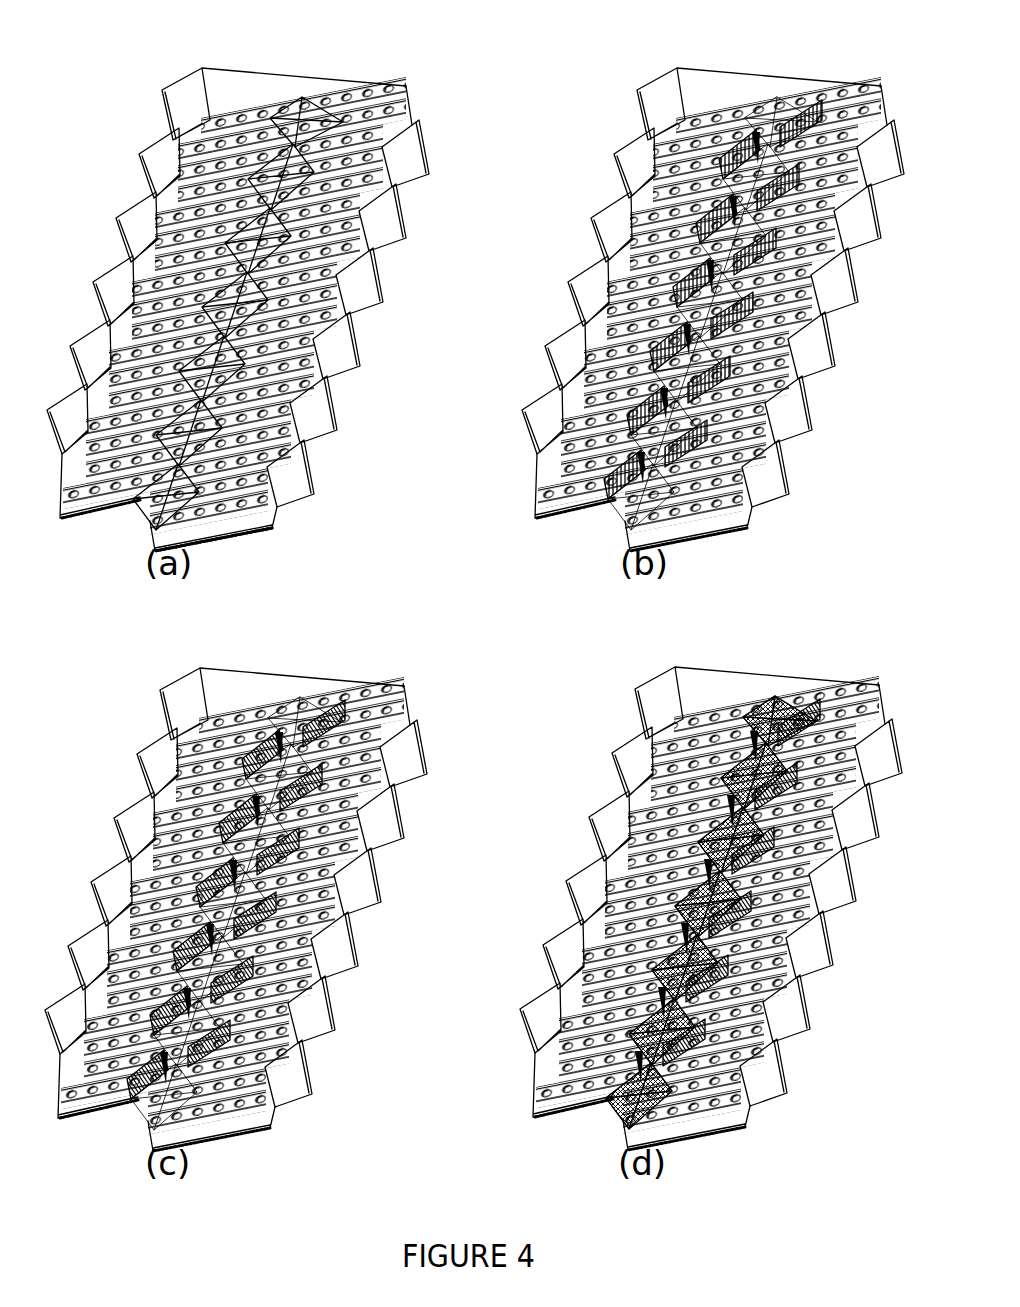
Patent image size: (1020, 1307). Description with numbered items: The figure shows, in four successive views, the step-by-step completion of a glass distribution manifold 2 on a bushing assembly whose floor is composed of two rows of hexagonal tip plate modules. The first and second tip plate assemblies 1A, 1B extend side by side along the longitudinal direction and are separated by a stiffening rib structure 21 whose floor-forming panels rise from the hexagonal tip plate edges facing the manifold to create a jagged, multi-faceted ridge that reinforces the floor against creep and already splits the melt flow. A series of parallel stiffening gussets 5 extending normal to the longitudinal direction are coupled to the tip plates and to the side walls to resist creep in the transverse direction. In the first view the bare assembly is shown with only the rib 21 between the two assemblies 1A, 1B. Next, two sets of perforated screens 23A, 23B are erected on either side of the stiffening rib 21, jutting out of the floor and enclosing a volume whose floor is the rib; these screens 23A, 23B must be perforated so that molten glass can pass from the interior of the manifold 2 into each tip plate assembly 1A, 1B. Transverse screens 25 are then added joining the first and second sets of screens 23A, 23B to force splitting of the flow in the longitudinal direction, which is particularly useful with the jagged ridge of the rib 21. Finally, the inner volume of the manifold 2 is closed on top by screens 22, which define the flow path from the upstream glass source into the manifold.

The first tip plate assembly 1A is at (224, 49).
The second tip plate assembly 1B is at (377, 70).
The stiffening rib structure 21 is at (285, 136).
The stiffening gusset 5 is at (243, 534).
The glass distribution manifold 2 is at (775, 82).
The first set of screens or perforated panels 23A is at (748, 118).
The second set of screens or perforated panels 23B is at (820, 116).
The transverse screens or baffles 25 is at (303, 722).
The top screen 22 is at (782, 705).